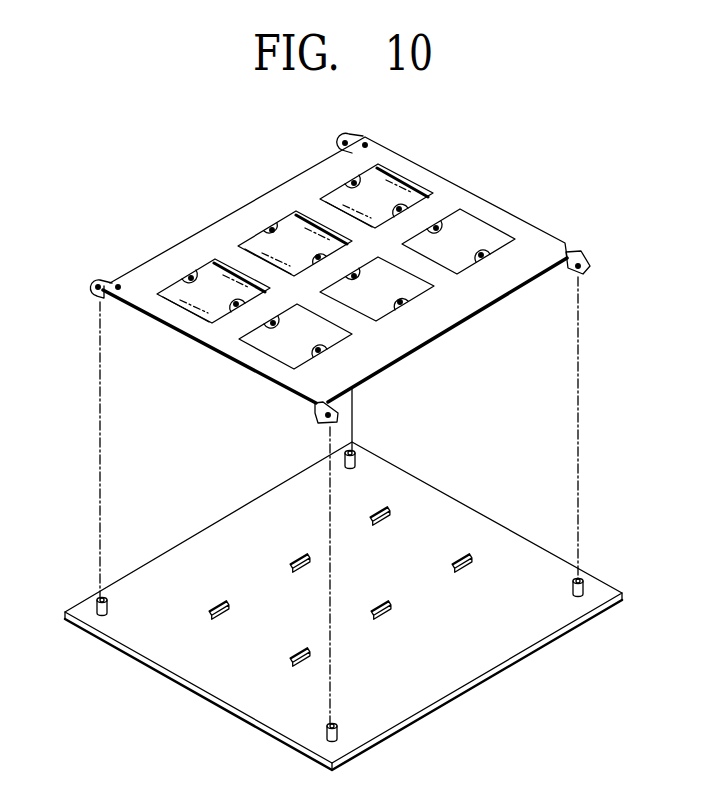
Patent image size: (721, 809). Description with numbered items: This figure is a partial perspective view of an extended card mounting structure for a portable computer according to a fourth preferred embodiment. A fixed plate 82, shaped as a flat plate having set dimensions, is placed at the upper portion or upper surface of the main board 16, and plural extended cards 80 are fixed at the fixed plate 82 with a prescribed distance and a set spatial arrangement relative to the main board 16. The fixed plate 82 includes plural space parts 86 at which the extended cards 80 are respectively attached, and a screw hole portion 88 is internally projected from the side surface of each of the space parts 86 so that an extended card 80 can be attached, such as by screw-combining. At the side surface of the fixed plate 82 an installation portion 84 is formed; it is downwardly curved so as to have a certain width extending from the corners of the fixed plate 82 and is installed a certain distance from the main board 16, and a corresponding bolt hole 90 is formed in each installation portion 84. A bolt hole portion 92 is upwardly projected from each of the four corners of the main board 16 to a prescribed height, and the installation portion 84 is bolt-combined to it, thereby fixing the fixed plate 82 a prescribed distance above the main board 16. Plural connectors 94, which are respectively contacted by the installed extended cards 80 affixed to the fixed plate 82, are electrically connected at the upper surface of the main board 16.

The main board 16 is at (500, 632).
The extended card 80 is at (227, 277).
The fixed plate 82 is at (545, 243).
The installation portion 84 is at (100, 295).
The space part 86 is at (463, 241).
The screw hole portion 88 is at (360, 177).
The bolt hole 90 is at (97, 282).
The bolt hole portion 92 is at (587, 590).
The connector 94 is at (290, 657).